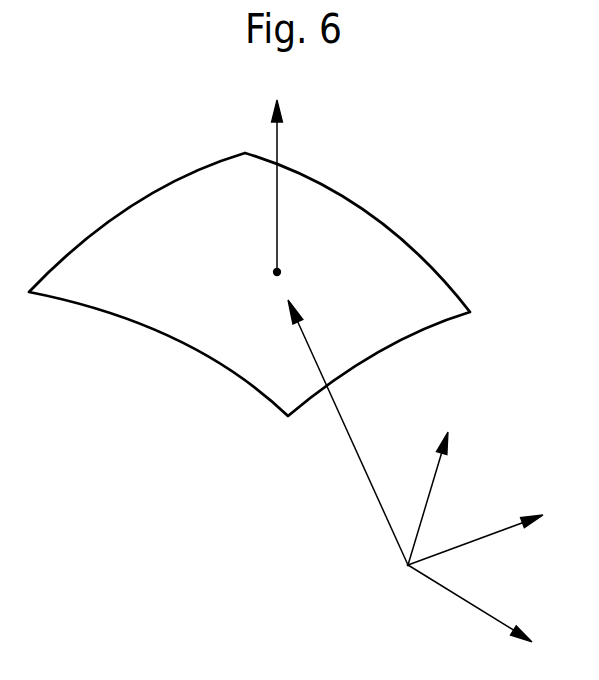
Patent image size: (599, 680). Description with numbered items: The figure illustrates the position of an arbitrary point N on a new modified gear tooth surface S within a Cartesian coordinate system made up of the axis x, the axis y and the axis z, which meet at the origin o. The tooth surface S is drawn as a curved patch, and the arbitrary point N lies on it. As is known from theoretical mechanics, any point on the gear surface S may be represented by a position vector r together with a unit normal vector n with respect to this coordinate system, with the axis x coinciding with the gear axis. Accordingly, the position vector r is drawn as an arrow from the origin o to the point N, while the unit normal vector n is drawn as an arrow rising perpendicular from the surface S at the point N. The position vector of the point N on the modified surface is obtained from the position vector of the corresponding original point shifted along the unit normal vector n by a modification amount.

The gear surface S is at (123, 357).
The arbitrary point N is at (290, 269).
The unit normal vector n is at (290, 181).
The position vector r is at (348, 432).
The origin of coordinate system o is at (398, 577).
The axis x is at (479, 612).
The axis y is at (484, 532).
The axis z is at (432, 483).